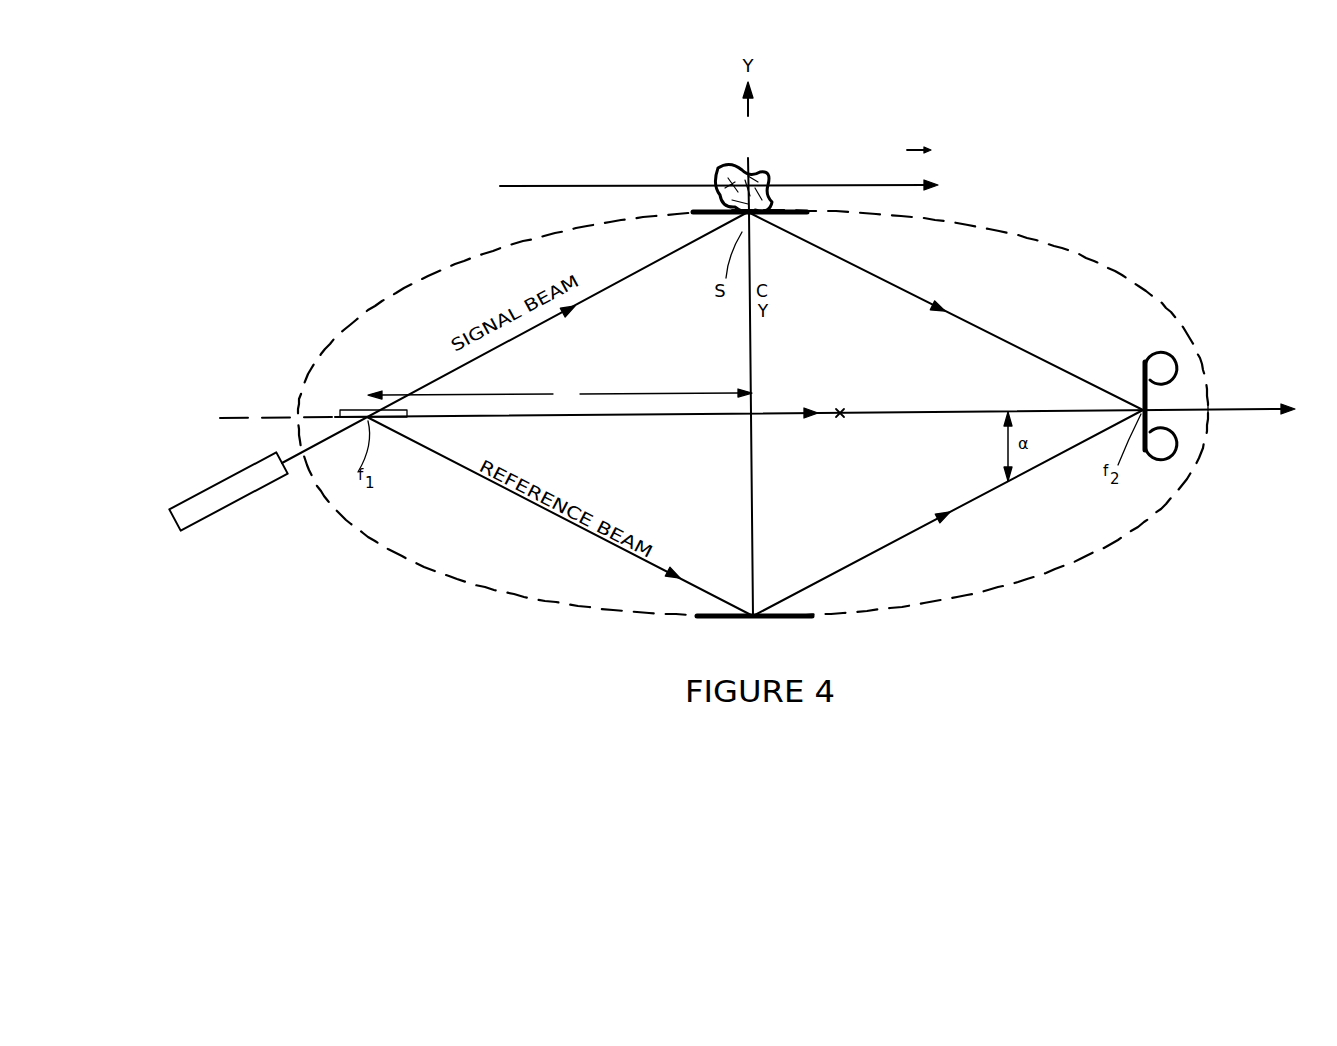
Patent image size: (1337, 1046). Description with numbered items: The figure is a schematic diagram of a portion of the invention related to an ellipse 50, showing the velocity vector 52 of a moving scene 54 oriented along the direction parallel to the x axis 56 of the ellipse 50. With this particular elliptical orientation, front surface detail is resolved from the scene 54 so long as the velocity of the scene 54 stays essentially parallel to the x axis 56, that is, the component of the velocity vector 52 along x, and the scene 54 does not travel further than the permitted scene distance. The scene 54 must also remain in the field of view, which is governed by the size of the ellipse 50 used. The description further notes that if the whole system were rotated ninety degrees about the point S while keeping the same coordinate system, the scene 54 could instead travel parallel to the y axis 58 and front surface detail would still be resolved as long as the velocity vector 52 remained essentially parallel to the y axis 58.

The ellipse 50 is at (358, 528).
The velocity vector 52 is at (866, 186).
The scene 54 is at (762, 178).
The x axis 56 is at (778, 418).
The y axis 58 is at (756, 391).